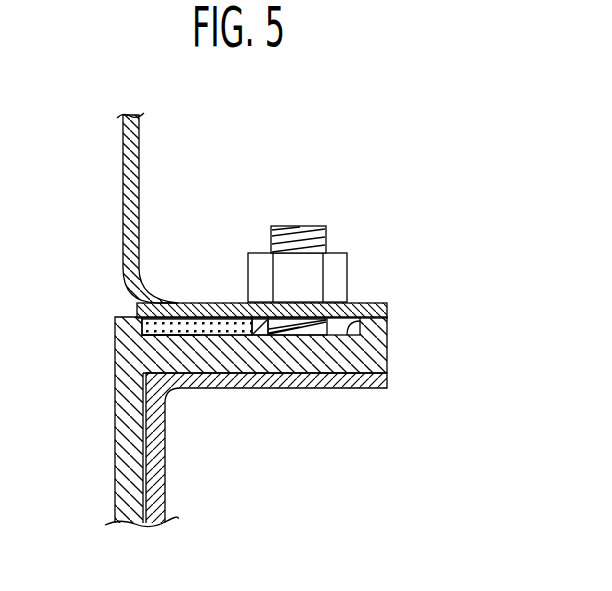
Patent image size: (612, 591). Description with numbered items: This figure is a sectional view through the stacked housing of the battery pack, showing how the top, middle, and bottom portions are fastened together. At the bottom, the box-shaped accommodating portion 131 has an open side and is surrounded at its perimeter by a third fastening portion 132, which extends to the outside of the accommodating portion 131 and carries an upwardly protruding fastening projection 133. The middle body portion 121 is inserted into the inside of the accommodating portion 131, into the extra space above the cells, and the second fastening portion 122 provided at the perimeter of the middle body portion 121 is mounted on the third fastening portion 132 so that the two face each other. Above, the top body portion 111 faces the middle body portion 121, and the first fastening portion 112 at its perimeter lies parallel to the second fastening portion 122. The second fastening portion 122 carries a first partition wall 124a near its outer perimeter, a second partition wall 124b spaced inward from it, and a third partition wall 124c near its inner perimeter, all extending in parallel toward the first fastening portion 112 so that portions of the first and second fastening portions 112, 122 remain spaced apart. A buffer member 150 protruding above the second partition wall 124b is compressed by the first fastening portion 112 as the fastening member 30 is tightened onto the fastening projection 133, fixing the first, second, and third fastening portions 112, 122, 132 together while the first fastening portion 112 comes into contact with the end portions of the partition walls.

The top body portion 111 is at (123, 190).
The first fastening portion 112 is at (387, 304).
The middle body portion 121 is at (128, 432).
The second fastening portion 122 is at (396, 348).
The first partition wall 124a is at (350, 324).
The second partition wall 124b is at (238, 337).
The third partition wall 124c is at (173, 337).
The accommodating portion 131 is at (158, 505).
The third fastening portion 132 is at (388, 381).
The fastening projection 133 is at (320, 240).
The buffer member 150 is at (196, 322).
The fastening member 30 is at (340, 277).